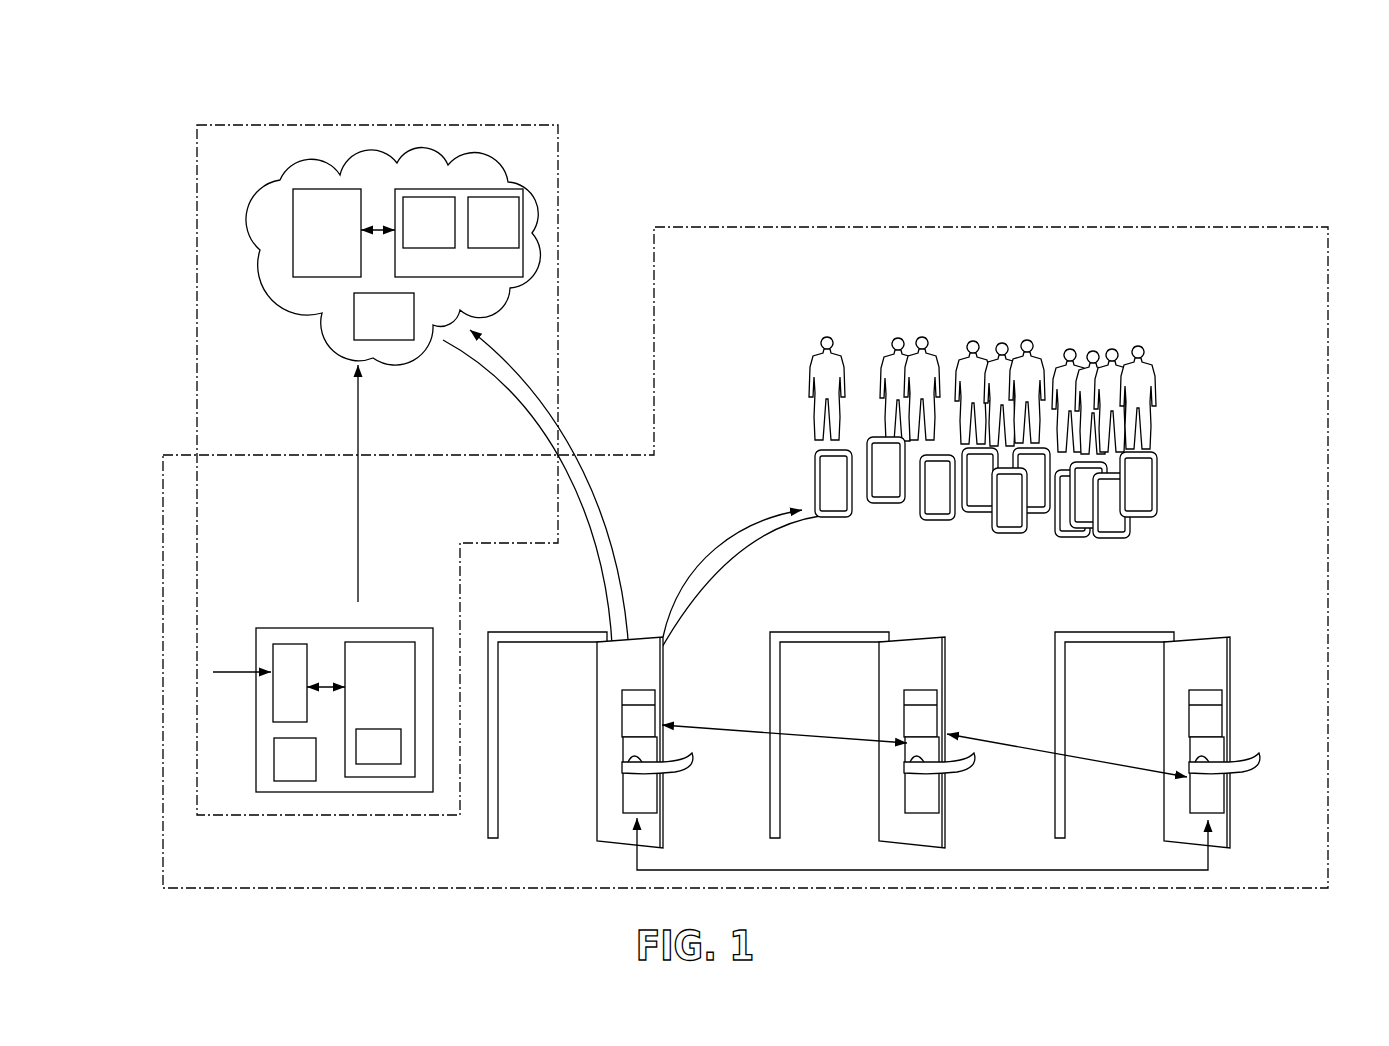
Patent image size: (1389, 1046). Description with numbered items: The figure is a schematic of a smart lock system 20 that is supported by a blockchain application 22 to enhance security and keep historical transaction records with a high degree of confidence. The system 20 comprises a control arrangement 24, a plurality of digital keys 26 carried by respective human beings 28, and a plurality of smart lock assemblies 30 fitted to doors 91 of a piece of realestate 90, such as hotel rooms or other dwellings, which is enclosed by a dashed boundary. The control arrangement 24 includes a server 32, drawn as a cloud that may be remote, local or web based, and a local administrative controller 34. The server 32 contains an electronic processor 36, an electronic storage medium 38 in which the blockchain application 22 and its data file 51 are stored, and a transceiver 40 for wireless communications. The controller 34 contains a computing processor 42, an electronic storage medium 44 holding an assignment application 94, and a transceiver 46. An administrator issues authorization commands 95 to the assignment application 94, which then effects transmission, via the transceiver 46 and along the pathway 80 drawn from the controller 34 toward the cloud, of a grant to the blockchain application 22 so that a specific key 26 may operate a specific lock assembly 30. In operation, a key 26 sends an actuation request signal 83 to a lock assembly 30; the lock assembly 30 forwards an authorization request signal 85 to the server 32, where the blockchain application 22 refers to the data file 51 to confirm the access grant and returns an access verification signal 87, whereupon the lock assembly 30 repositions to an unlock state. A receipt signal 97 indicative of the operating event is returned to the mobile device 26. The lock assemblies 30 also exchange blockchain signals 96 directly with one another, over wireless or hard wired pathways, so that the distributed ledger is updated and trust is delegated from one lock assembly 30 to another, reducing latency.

The system 20 is at (1220, 167).
The blockchain application 22 is at (416, 235).
The control arrangement 24 is at (196, 253).
The digital keys 26 is at (815, 488).
The human beings 28 is at (1027, 342).
The smart lock assemblies 30 is at (652, 708).
The server 32 is at (272, 195).
The administrative or management controller 34 is at (261, 627).
The electronic processor 36 is at (325, 189).
The electronic storage medium 38 is at (428, 189).
The transceiver 40 is at (372, 329).
The computing processor 42 is at (271, 692).
The electronic storage medium 44 is at (416, 665).
The transceiver 46 is at (273, 764).
The data file 51 is at (487, 197).
The communication link 80 is at (358, 540).
The actuation request signal 83 is at (733, 565).
The authorization request signal 85 is at (618, 547).
The access verification signal 87 is at (512, 407).
The realestate 90 is at (1329, 365).
The door 91 is at (912, 637).
The assignment application 94 is at (366, 765).
The authorization commands 95 is at (238, 634).
The blockchain signal 96 is at (745, 732).
The receipt signal 97 is at (713, 550).